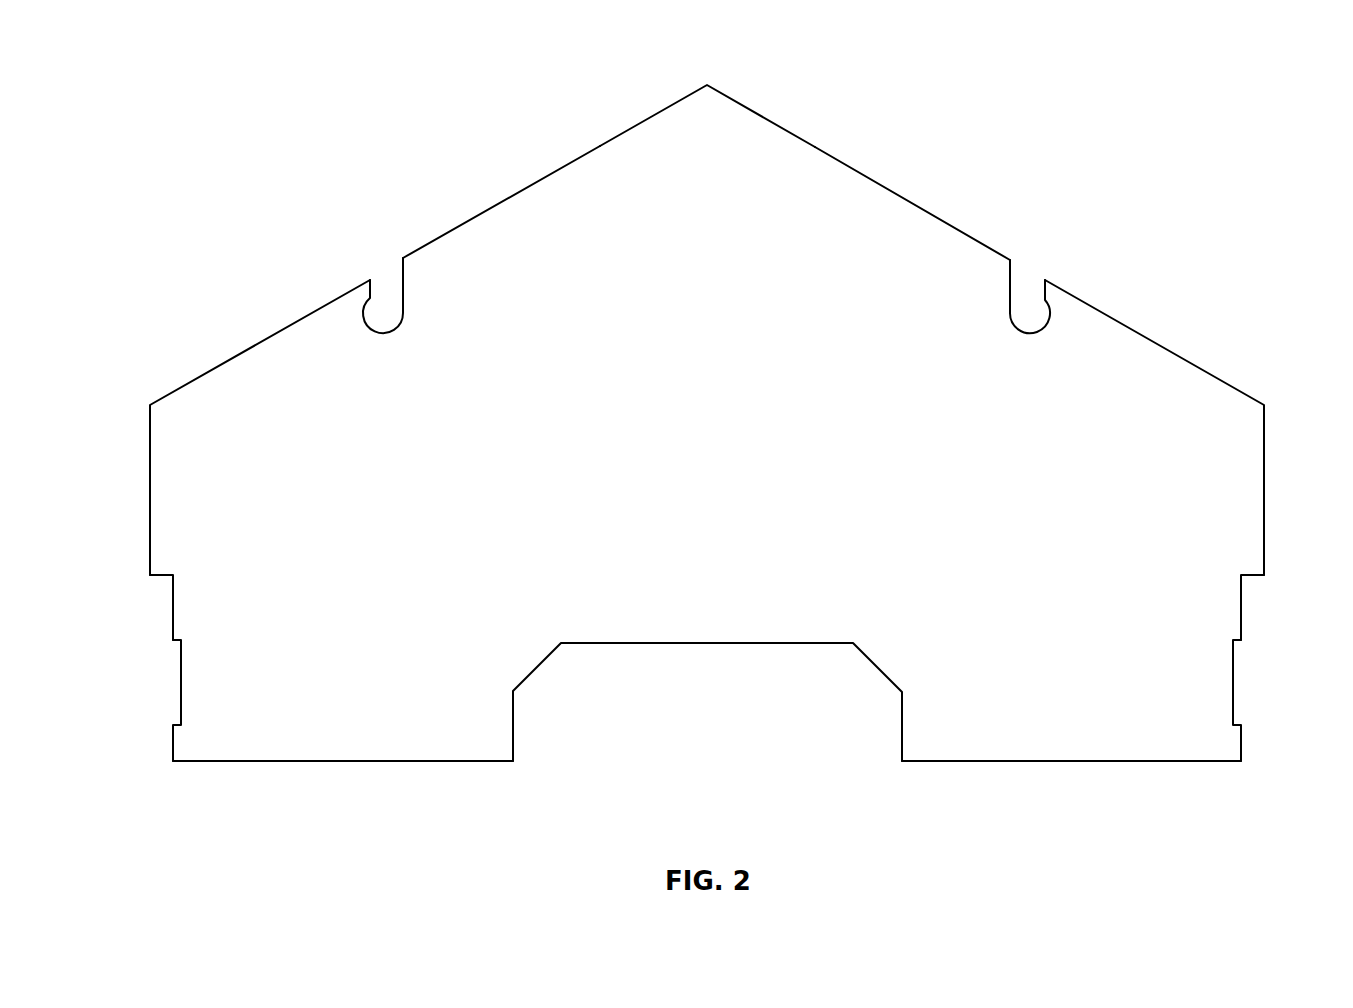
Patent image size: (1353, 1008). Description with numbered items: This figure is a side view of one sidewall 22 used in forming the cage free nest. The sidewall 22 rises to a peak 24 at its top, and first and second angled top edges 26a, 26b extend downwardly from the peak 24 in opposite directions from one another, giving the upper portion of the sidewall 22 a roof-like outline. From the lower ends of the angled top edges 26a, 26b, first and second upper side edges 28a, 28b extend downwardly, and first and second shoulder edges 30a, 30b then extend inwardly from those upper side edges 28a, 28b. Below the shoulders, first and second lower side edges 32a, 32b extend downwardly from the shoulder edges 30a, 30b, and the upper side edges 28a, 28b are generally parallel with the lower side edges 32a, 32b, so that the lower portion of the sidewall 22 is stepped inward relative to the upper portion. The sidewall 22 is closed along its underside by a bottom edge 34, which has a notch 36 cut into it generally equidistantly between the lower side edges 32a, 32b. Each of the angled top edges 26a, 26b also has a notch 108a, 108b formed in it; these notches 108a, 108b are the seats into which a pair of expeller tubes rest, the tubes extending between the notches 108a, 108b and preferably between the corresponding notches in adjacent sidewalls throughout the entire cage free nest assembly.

The sidewall 22 is at (1122, 141).
The peak 24 is at (707, 85).
The first angled top edge 26a is at (505, 198).
The second angled top edge 26b is at (907, 199).
The first upper side edge 28a is at (150, 480).
The second upper side edge 28b is at (1264, 485).
The first shoulder edge 30a is at (159, 577).
The second shoulder edge 30b is at (1253, 580).
The first lower side edge 32a is at (173, 638).
The second lower side edge 32b is at (1242, 638).
The bottom edge 34 is at (375, 761).
The notch 36 is at (728, 693).
The notch 108a is at (380, 313).
The notch 108b is at (1035, 315).